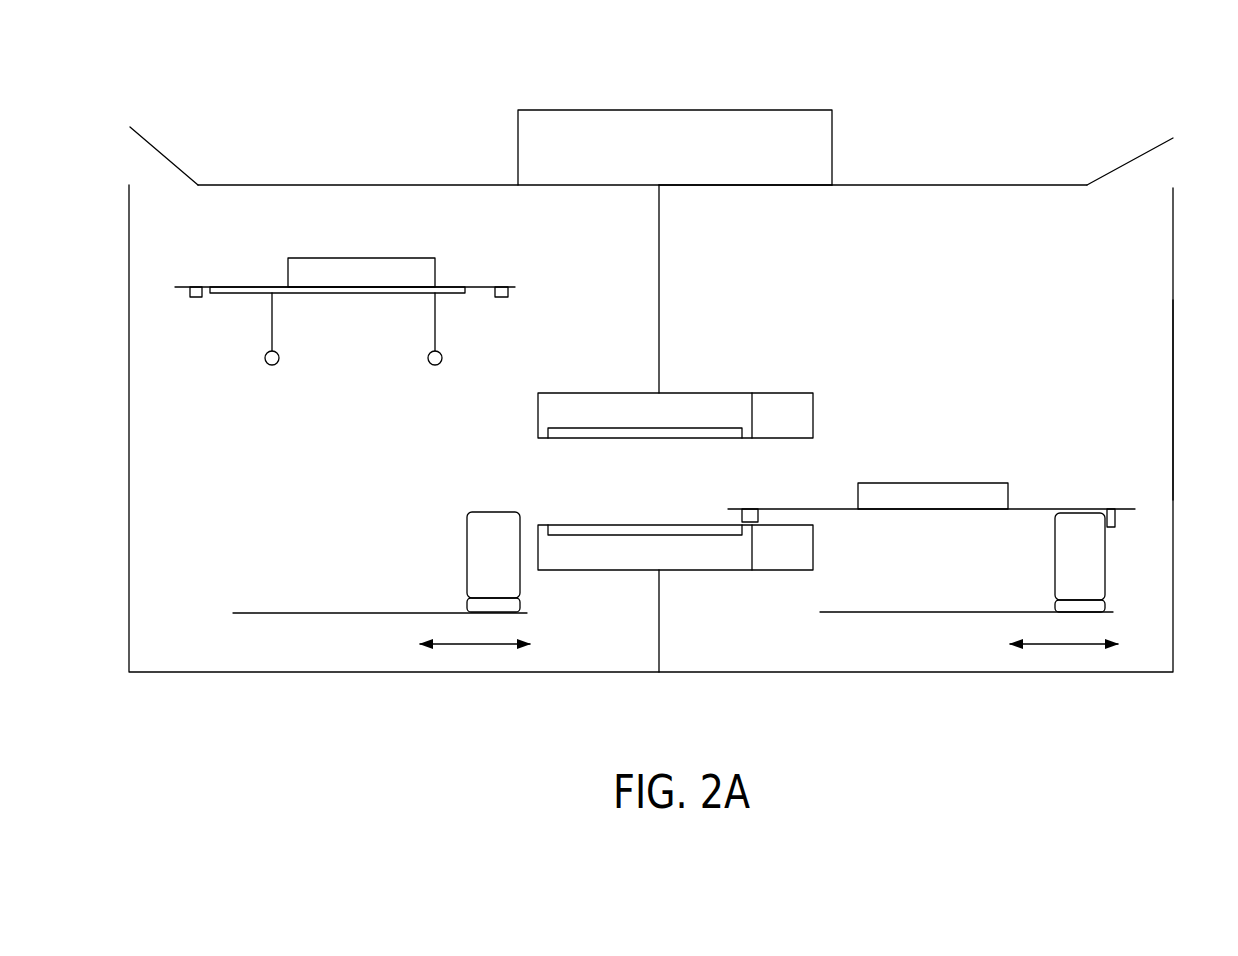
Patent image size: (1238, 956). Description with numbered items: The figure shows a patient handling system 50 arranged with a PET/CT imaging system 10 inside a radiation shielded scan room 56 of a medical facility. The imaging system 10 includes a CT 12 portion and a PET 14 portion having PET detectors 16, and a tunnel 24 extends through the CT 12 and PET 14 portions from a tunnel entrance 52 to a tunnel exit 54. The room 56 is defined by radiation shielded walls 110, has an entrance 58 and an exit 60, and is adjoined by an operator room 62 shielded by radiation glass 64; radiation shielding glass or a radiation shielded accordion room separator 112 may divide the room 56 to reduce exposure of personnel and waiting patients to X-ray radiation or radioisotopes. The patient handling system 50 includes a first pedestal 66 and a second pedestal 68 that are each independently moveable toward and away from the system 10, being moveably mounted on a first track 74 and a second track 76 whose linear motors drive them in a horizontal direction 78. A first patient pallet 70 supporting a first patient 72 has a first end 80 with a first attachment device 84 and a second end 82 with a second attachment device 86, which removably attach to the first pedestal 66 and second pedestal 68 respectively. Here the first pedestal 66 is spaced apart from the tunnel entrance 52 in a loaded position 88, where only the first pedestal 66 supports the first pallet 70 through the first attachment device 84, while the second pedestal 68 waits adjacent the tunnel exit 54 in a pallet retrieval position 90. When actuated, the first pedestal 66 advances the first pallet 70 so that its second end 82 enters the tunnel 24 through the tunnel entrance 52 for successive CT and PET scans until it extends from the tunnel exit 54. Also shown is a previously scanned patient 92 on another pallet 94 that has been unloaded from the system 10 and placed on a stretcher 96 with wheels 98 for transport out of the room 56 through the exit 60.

The PET/CT imaging system 10 is at (962, 290).
The CT portion 12 is at (798, 407).
The PET portion 14 is at (582, 398).
The PET detectors 16 is at (675, 433).
The tunnel 24 is at (627, 489).
The patient handling system 50 is at (1148, 320).
The tunnel entrance 52 is at (810, 465).
The tunnel exit 54 is at (570, 472).
The radiation shielded scan room 56 is at (1162, 470).
The entrance 58 is at (1142, 185).
The exit 60 is at (147, 172).
The operator room 62 is at (790, 135).
The radiation glass 64 is at (780, 187).
The first pedestal 66 is at (1083, 555).
The second pedestal 68 is at (477, 548).
The first patient pallet 70 is at (965, 510).
The first patient 72 is at (940, 495).
The first track 74 is at (862, 615).
The second track 76 is at (265, 612).
The horizontal direction 78 is at (467, 648).
The first end 80 is at (1128, 508).
The second end 82 is at (737, 508).
The first attachment device 84 is at (502, 283).
The second attachment device 86 is at (192, 285).
The loaded position 88 is at (1022, 565).
The pallet retrieval position 90 is at (542, 636).
The previously scanned patient 92 is at (335, 278).
The pallet 94 is at (472, 283).
The stretcher 96 is at (228, 285).
The wheels 98 is at (272, 367).
The radiation shielded walls 110 is at (975, 183).
The radiation shielded accordion room separator 112 is at (660, 268).